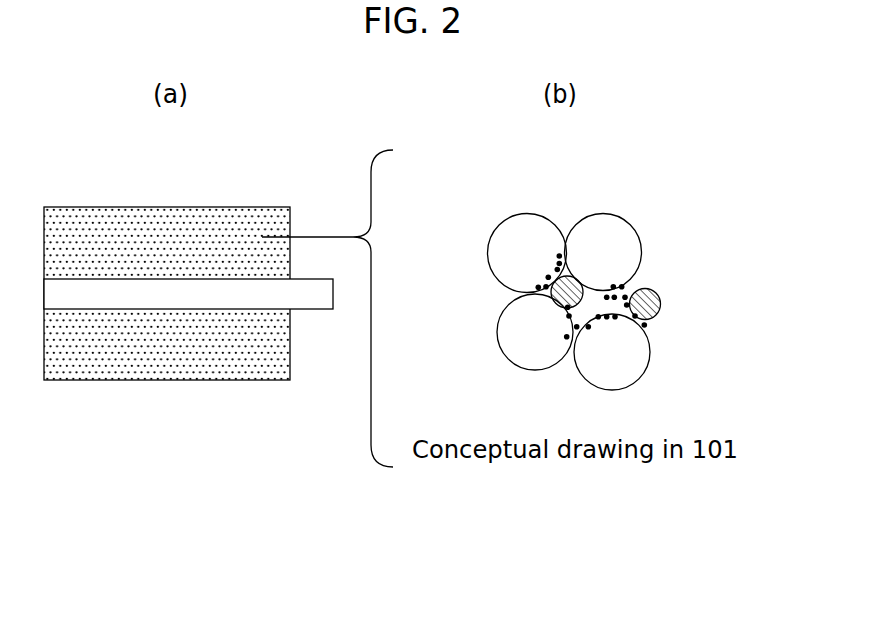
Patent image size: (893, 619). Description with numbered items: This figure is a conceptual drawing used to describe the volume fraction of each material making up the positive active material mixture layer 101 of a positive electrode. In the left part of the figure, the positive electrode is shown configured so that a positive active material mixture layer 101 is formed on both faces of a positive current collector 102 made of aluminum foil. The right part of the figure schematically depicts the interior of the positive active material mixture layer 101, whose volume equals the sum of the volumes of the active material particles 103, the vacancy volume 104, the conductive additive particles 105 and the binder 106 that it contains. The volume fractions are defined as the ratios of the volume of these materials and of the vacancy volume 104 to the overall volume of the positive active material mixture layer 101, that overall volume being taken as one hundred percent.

The positive active material mixture layer 101 is at (220, 218).
The positive current collector 102 is at (141, 293).
The active material particles 103 is at (520, 225).
The vacancy volume 104 is at (582, 311).
The conductive additive particles 105 is at (648, 318).
The binder 106 is at (552, 293).